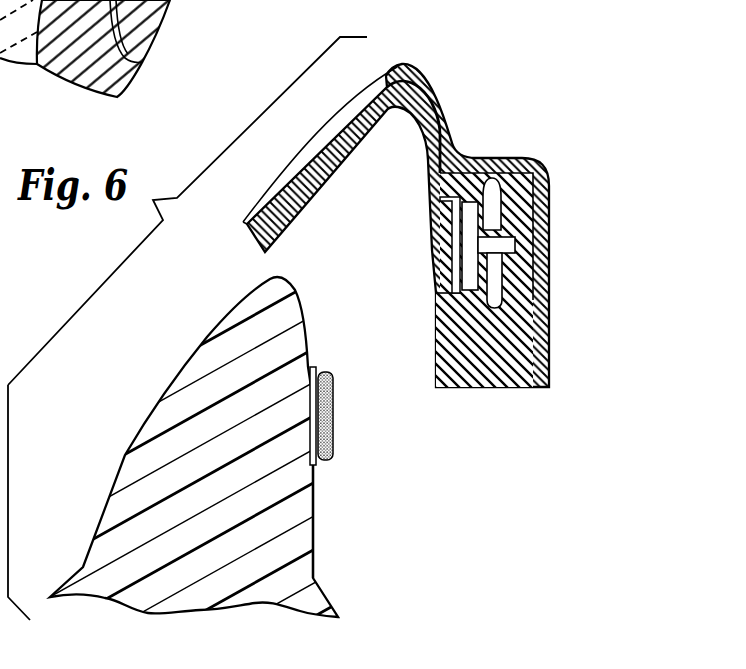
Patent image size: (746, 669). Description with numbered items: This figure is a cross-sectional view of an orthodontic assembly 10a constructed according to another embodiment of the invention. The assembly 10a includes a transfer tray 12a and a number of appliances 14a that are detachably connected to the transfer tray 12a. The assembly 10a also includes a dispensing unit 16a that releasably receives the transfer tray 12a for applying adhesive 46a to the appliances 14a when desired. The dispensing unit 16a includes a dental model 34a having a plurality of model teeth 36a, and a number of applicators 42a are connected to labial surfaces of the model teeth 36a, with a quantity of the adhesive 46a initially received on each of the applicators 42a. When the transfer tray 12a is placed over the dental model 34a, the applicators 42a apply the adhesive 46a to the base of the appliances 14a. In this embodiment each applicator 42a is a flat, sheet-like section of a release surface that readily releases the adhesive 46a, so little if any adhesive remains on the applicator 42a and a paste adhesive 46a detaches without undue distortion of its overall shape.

The orthodontic assembly 10a is at (430, 200).
The transfer tray 12a is at (428, 61).
The appliances 14a is at (524, 215).
The dispensing unit 16a is at (261, 468).
The dental model 34a is at (330, 563).
The model teeth 36a is at (215, 358).
The applicators 42a is at (318, 464).
The adhesive 46a is at (328, 417).